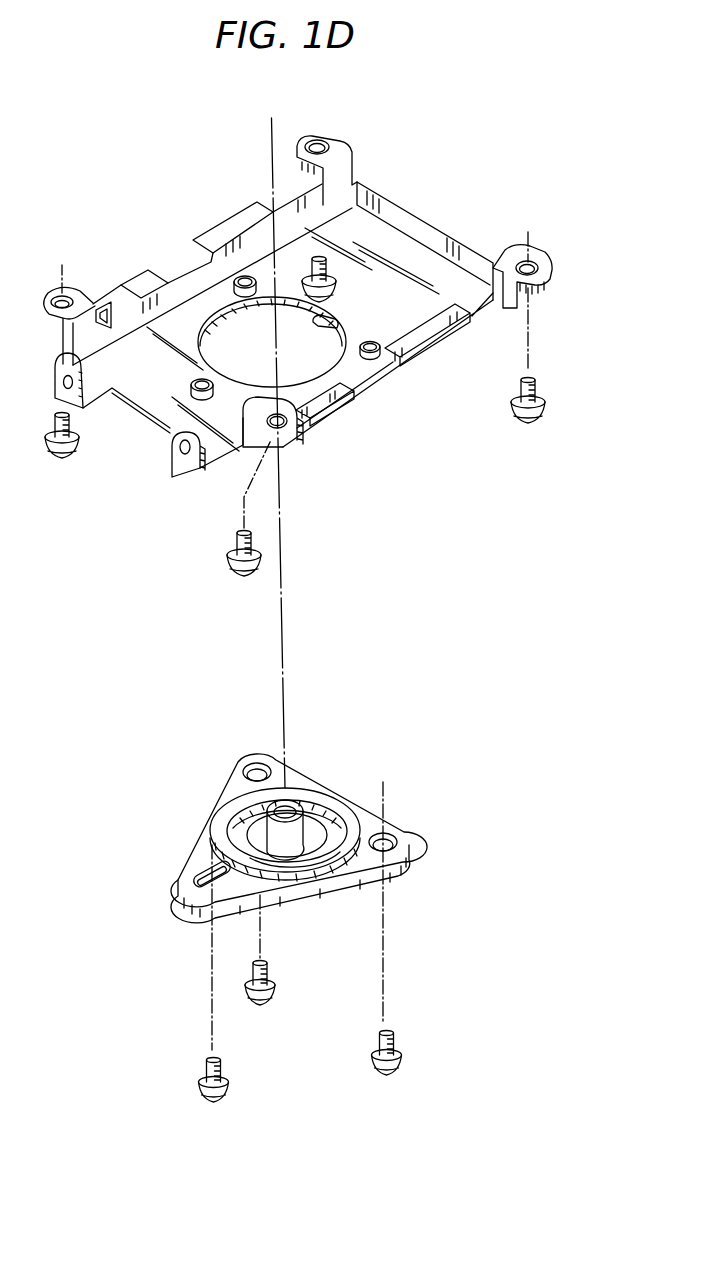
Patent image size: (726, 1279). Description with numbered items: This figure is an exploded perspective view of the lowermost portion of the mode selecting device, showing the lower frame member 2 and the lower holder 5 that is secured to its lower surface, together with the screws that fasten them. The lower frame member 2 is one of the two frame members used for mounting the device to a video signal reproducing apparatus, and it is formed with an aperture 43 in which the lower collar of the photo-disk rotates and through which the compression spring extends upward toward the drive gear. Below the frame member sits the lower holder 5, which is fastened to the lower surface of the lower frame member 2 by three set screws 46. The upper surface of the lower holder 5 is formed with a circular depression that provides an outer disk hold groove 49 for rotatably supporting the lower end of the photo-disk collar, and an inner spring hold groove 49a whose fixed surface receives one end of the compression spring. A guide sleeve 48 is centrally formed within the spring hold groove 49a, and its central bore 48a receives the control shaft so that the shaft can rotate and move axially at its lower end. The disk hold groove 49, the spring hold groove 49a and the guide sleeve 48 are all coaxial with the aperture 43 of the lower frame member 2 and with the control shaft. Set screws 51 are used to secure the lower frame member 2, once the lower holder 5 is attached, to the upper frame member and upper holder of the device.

The lower frame member 2 is at (412, 376).
The aperture 43 is at (350, 323).
The set screws 51 is at (78, 447).
The lower holder 5 is at (413, 833).
The set screws 46 is at (372, 1060).
The guide sleeve 48 is at (282, 835).
The central bore 48a is at (286, 806).
The outer disk hold groove 49 is at (243, 813).
The inner spring hold groove 49a is at (307, 855).